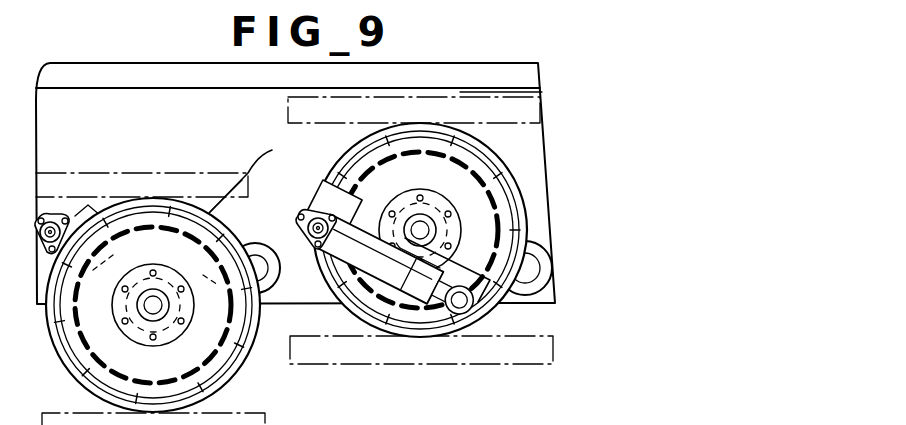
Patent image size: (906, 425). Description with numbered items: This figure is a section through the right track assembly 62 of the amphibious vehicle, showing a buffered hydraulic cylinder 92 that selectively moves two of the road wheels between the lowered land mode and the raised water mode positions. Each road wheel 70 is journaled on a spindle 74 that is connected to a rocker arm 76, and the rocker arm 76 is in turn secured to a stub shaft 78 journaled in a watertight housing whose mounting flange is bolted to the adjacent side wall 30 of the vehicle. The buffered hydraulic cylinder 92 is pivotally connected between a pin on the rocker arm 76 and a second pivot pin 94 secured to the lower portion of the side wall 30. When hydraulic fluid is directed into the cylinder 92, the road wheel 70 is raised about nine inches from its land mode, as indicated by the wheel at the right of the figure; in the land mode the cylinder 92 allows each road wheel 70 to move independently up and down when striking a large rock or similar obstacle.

The side wall 30 is at (540, 128).
The right track assembly 62 is at (288, 99).
The road wheel 70 is at (345, 152).
The spindle 74 is at (153, 312).
The rocker arm 76 is at (218, 240).
The stub shaft 78 is at (276, 284).
The buffered hydraulic cylinder 92 is at (147, 195).
The second pivot pin 94 is at (52, 222).